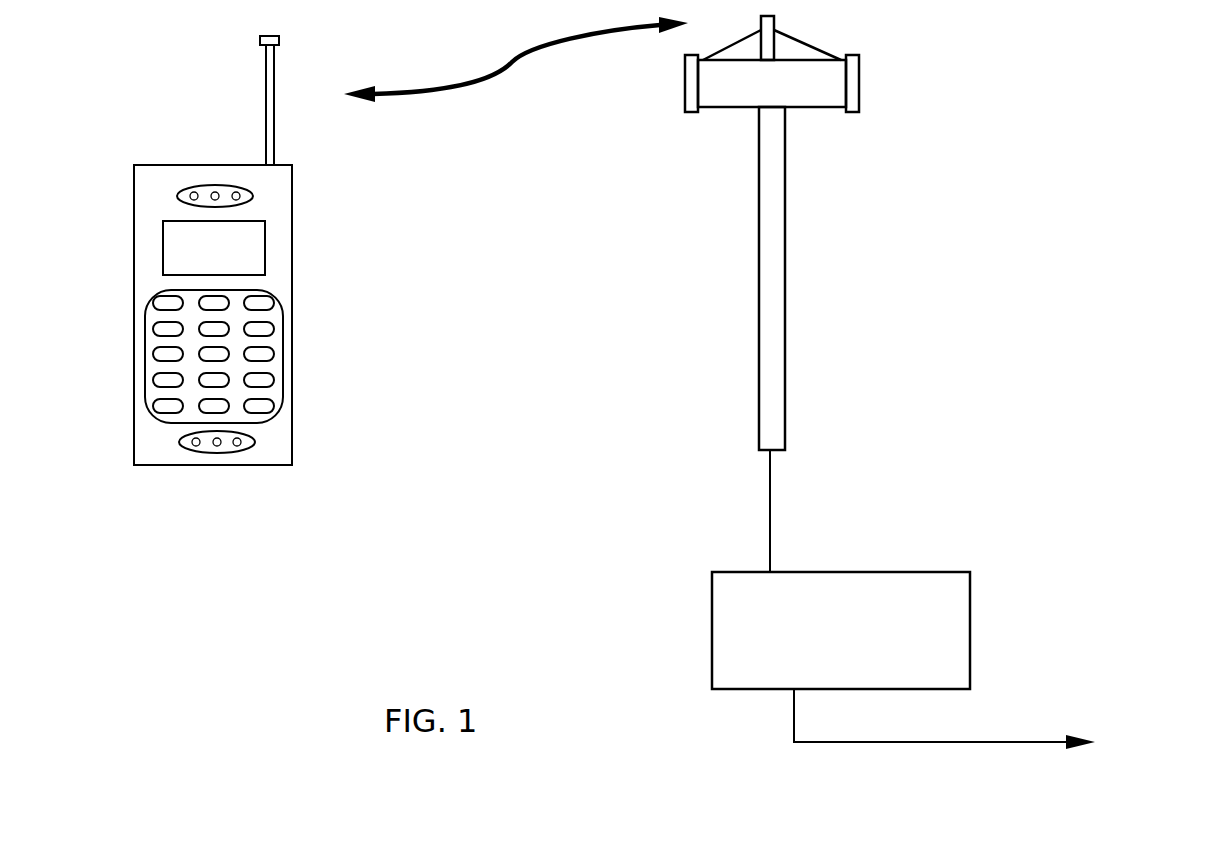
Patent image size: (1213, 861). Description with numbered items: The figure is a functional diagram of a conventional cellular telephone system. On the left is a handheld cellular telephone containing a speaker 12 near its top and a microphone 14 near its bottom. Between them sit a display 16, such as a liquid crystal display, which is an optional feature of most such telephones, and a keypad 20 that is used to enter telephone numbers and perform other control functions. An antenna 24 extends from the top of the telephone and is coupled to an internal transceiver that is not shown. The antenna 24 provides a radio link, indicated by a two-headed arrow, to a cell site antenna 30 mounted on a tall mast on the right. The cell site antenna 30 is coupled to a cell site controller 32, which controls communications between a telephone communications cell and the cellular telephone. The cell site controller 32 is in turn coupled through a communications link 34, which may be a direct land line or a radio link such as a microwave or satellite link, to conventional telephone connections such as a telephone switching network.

The speaker 12 is at (253, 193).
The microphone 14 is at (255, 437).
The display 16 is at (266, 250).
The keypad 20 is at (283, 362).
The antenna 24 is at (265, 108).
The cell site antenna 30 is at (785, 185).
The cell site controller 32 is at (937, 572).
The communications link 34 is at (912, 745).